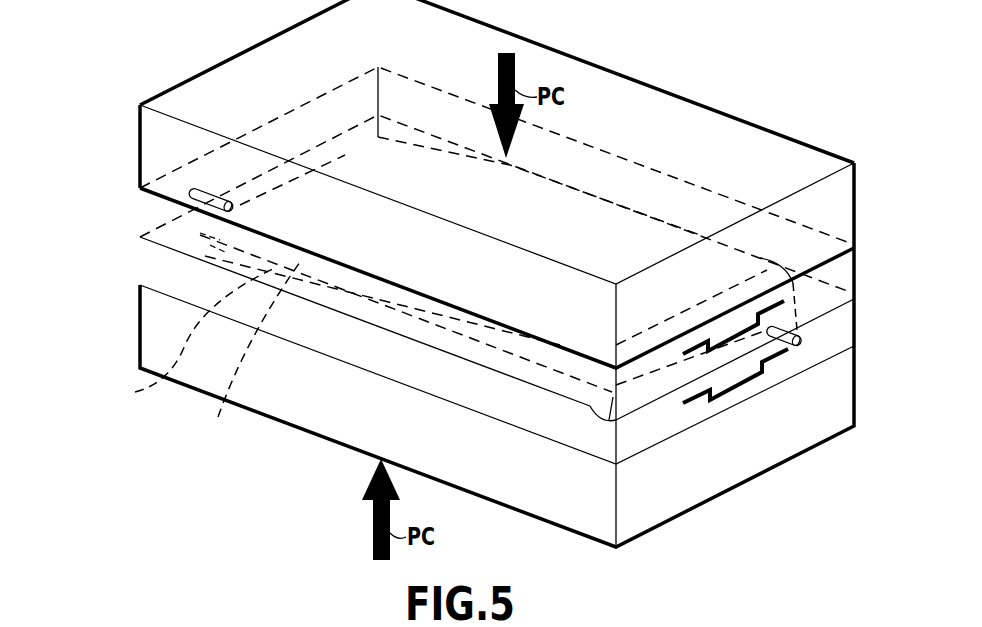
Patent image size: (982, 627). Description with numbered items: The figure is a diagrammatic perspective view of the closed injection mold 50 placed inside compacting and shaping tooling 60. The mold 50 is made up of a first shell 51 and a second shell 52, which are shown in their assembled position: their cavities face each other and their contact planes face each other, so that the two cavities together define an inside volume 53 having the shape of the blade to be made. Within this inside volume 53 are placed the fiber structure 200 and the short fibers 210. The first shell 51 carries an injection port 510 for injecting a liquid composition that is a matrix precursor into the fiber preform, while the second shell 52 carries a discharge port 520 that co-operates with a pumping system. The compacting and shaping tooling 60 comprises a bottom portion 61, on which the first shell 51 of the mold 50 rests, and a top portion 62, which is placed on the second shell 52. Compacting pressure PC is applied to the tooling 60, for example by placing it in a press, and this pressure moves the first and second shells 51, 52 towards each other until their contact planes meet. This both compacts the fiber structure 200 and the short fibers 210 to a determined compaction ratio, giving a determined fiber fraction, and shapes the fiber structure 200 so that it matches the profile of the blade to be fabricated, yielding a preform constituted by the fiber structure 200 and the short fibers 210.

The injection mold 50 is at (75, 182).
The first shell 51 is at (139, 263).
The second shell 52 is at (139, 206).
The inside volume 53 is at (192, 340).
The compacting and shaping tooling 60 is at (843, 512).
The bottom portion 61 is at (662, 487).
The top portion 62 is at (823, 247).
The fiber structure 200 is at (587, 222).
The short fibers 210 is at (250, 355).
The injection port 510 is at (797, 348).
The discharge port 520 is at (198, 195).